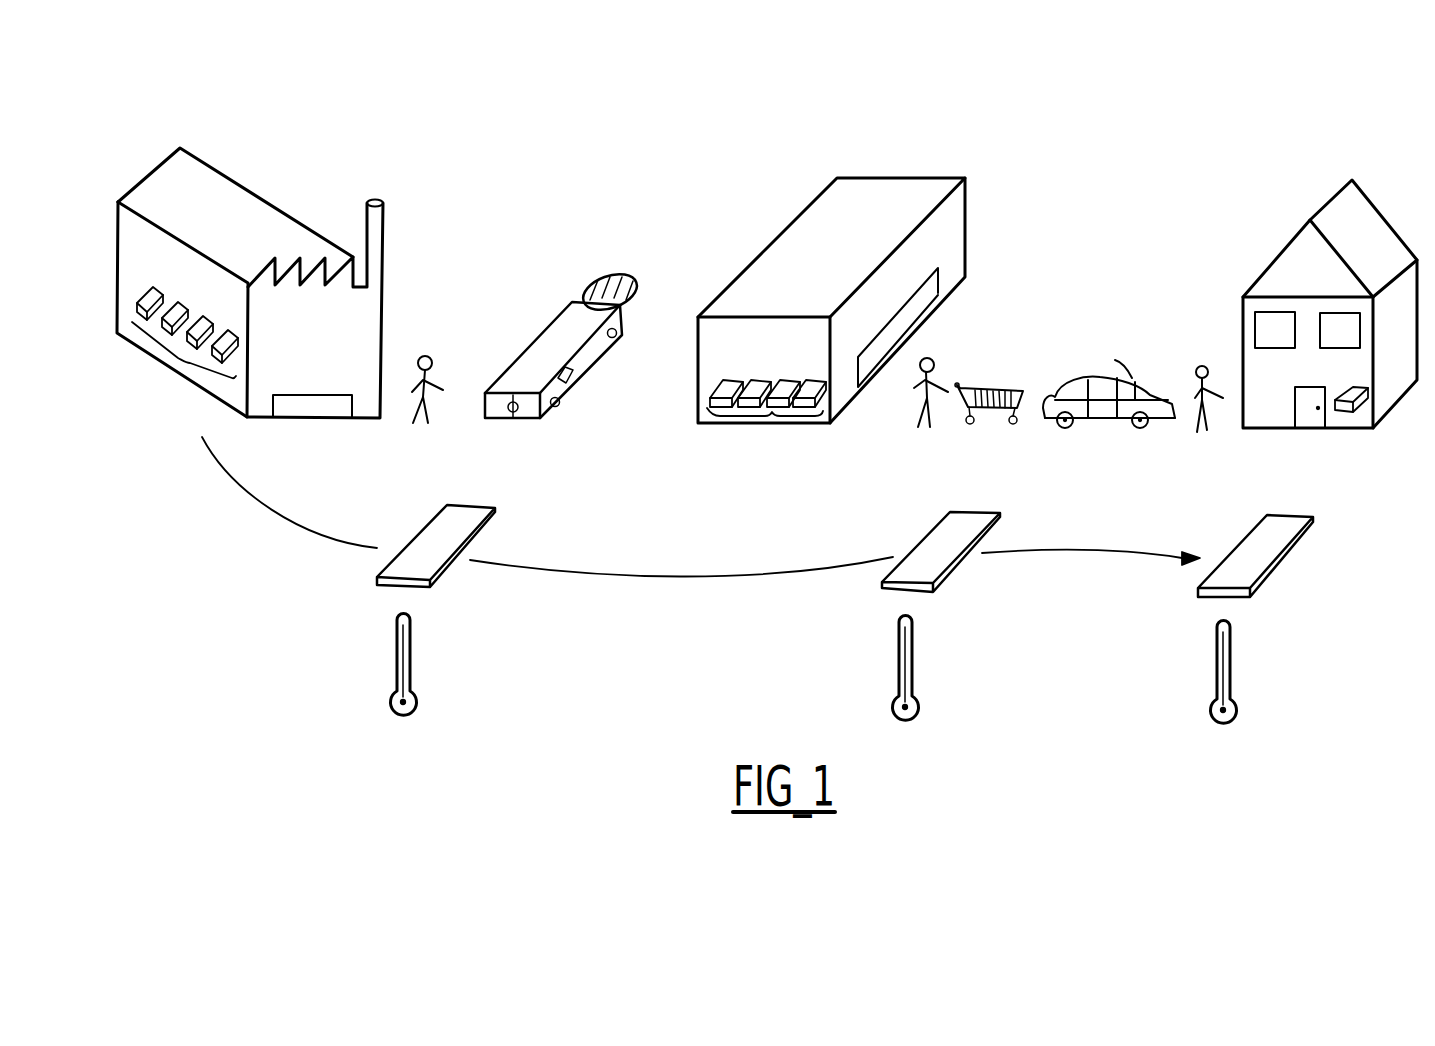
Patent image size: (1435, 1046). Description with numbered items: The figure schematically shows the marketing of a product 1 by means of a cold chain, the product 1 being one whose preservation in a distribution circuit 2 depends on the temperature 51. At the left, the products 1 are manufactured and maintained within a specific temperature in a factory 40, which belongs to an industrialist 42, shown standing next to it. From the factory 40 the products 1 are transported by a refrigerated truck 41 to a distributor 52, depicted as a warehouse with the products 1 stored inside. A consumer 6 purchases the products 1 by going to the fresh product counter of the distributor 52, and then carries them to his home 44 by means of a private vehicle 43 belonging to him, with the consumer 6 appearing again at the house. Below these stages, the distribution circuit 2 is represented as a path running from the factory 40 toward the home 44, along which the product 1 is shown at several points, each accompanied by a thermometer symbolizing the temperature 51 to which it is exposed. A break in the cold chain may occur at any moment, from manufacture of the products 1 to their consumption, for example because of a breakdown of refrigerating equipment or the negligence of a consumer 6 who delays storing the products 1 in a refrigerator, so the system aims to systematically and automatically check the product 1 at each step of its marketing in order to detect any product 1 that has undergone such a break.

The product 1 is at (182, 362).
The distribution circuit 2 is at (678, 577).
The consumer 6 is at (935, 352).
The factory 40 is at (248, 185).
The refrigerated truck 41 is at (528, 332).
The industrialist 42 is at (425, 350).
The private vehicle 43 is at (1097, 367).
The home 44 is at (1372, 200).
The temperature 51 is at (412, 652).
The distributor 52 is at (797, 253).